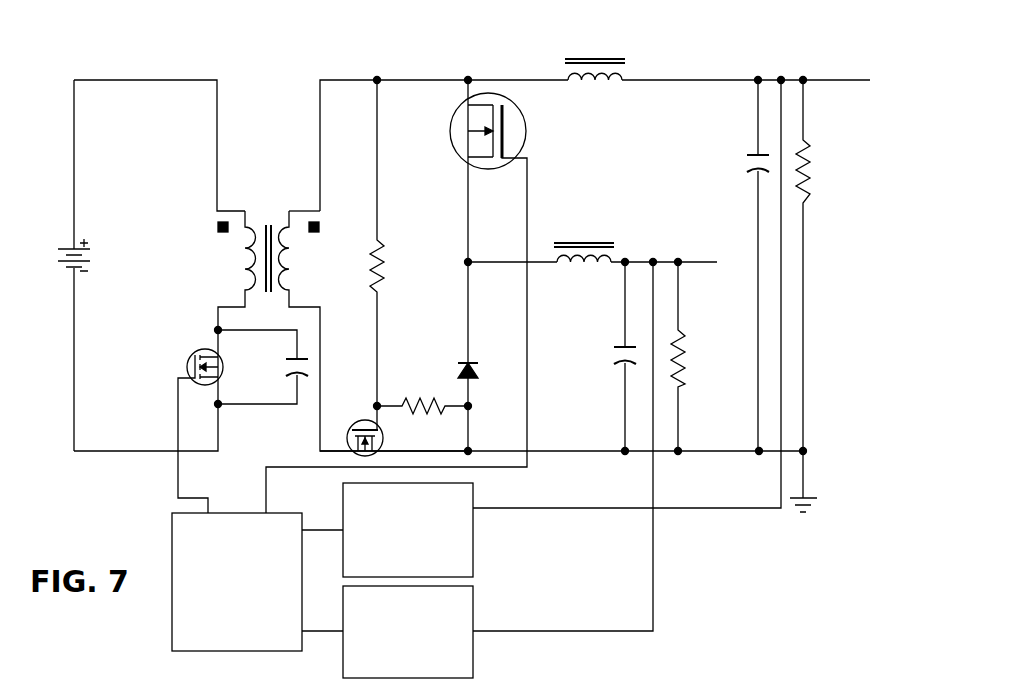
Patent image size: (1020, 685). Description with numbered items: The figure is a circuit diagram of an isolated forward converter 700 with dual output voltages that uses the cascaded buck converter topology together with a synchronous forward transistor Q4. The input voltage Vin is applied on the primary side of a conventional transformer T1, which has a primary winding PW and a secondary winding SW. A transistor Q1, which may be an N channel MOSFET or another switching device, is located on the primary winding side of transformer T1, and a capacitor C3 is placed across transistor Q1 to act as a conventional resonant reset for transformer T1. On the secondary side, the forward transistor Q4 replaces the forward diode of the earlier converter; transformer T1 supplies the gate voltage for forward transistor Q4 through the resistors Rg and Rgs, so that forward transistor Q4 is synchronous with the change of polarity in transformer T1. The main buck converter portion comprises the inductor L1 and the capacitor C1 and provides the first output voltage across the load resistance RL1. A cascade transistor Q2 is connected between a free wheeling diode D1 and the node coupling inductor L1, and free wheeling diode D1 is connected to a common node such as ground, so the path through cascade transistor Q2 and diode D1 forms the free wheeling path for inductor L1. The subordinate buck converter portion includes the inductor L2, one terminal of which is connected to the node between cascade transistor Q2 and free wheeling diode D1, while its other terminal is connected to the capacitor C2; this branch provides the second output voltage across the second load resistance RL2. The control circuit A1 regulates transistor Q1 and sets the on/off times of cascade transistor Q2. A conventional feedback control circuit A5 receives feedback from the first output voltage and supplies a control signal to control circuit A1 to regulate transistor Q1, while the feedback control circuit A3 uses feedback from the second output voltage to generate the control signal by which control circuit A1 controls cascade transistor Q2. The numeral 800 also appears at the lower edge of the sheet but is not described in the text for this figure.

The isolated forward converter 700 is at (733, 66).
The circuit (continued on next sheet) 800 is at (752, 684).
The input voltage Vin is at (97, 265).
The transformer T1 is at (271, 294).
The primary winding PW is at (228, 209).
The secondary winding SW is at (313, 209).
The transistor Q1 is at (195, 420).
The capacitor C3 is at (263, 367).
The resistor Rg is at (395, 255).
The resistor Rgs is at (422, 392).
The synchronous forward transistor Q4 is at (355, 427).
The cascade transistor Q2 is at (436, 296).
The free wheeling diode D1 is at (489, 384).
The inductor L1 is at (595, 85).
The inductor L2 is at (584, 270).
The capacitor C1 is at (739, 265).
The capacitor C2 is at (609, 356).
The load resistance RL1 is at (829, 265).
The second load resistance RL2 is at (704, 356).
The control circuit A1 is at (237, 582).
The feedback control circuit A5 is at (408, 530).
The feedback control circuit A3 is at (408, 632).